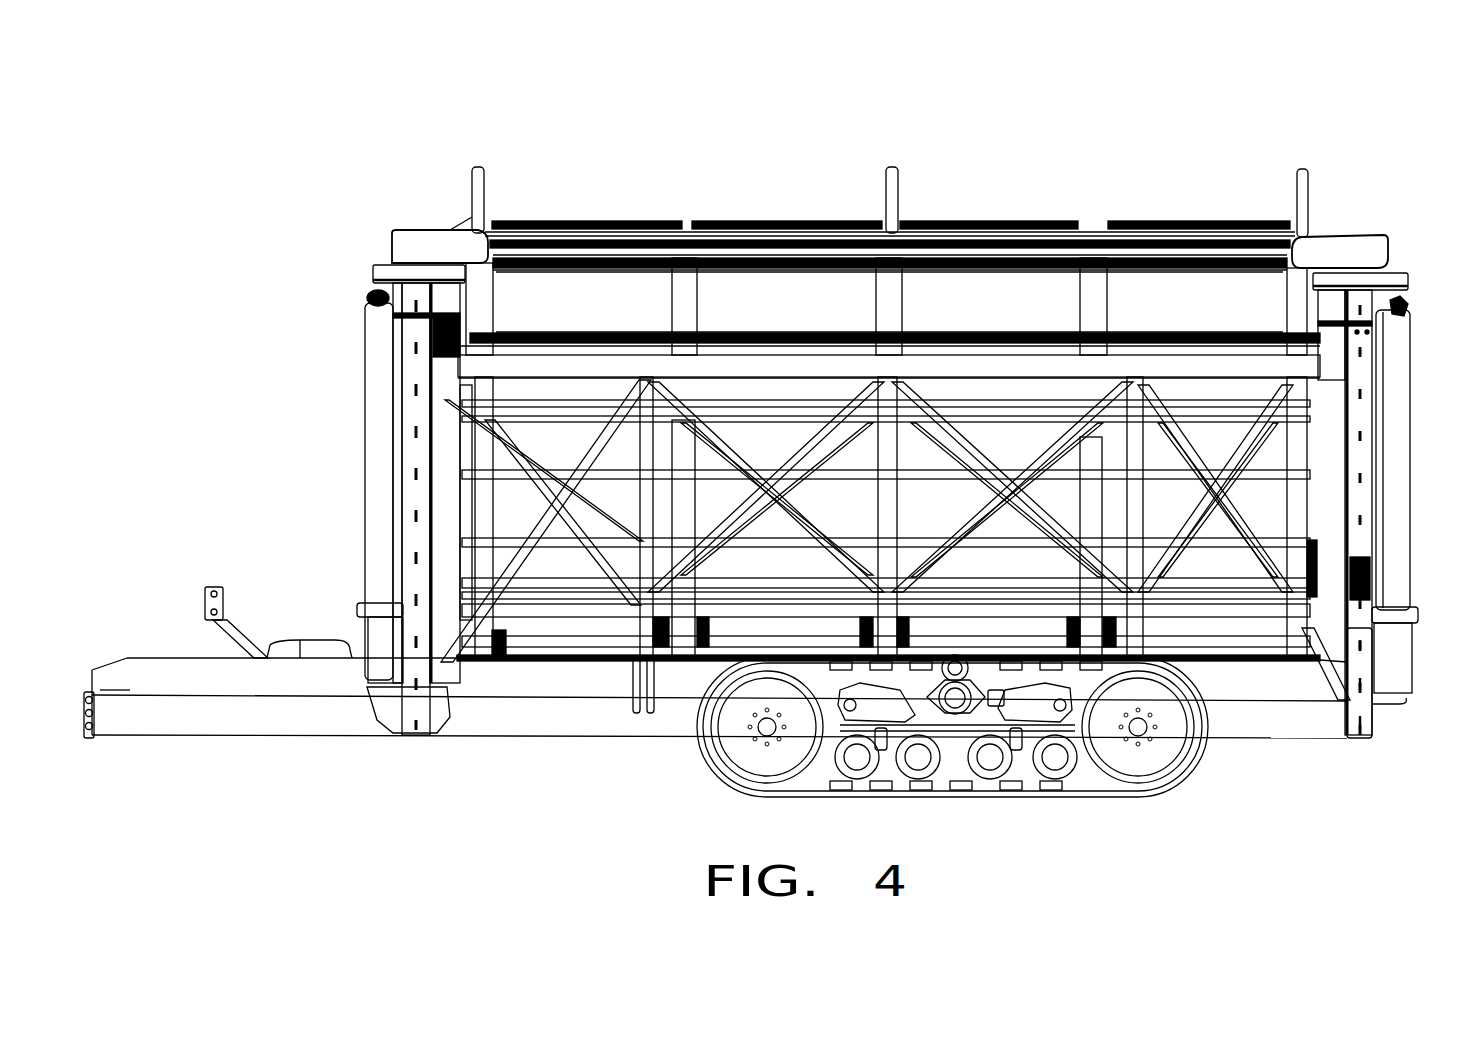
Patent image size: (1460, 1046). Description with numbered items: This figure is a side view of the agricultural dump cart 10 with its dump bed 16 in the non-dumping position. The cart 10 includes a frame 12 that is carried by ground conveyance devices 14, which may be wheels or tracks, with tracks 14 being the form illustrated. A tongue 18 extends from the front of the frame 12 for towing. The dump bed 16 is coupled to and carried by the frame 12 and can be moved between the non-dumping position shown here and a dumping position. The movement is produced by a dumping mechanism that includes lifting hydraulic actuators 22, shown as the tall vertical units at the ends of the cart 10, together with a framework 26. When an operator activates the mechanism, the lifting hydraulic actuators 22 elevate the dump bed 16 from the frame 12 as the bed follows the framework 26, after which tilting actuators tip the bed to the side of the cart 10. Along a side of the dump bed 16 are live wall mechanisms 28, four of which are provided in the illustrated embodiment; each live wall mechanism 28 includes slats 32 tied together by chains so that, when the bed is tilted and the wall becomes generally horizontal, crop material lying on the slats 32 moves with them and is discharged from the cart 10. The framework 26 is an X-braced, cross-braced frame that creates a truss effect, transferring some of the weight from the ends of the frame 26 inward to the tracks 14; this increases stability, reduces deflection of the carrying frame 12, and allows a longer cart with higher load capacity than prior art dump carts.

The agricultural dump cart 10 is at (1243, 110).
The frame 12 is at (556, 735).
The ground conveyance devices 14 is at (1190, 772).
The dump bed 16 is at (652, 138).
The tongue 18 is at (181, 740).
The lifting hydraulic actuators 22 is at (365, 394).
The framework 26 is at (603, 688).
The live wall mechanism 28 is at (571, 221).
The slats 32 is at (604, 328).